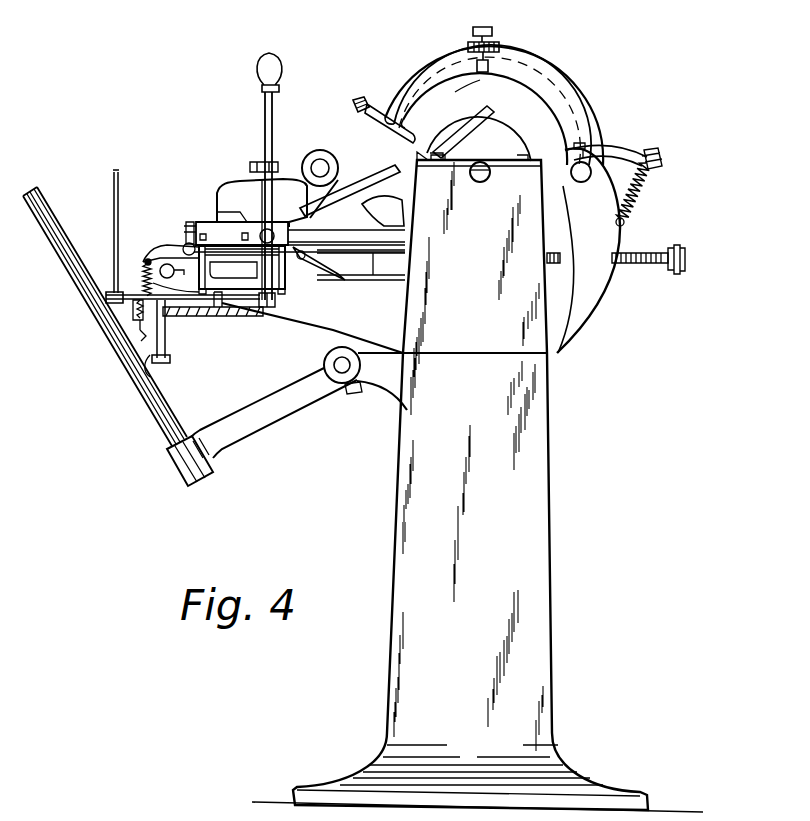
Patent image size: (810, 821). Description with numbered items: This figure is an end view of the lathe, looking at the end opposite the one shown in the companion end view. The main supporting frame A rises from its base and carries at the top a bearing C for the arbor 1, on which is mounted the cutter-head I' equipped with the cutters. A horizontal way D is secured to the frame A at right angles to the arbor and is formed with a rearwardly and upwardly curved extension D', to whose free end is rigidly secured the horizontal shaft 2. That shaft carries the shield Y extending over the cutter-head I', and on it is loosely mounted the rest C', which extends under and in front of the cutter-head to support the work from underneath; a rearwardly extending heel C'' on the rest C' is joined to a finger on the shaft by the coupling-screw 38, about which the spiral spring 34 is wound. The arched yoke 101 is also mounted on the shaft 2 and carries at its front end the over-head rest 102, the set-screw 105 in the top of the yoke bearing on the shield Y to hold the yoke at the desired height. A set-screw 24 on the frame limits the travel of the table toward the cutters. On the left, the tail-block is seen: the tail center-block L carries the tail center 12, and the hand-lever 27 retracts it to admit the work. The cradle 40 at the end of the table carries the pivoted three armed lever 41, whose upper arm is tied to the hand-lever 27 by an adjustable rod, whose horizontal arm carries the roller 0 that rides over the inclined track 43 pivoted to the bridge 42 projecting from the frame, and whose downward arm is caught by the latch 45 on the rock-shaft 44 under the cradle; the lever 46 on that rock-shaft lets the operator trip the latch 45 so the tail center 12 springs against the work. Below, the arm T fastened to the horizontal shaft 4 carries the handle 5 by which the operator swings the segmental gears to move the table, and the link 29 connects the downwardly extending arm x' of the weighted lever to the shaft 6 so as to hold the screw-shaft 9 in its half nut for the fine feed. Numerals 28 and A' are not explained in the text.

The main supporting frame A is at (477, 482).
The arbor 1 is at (478, 183).
The bearing C is at (489, 187).
The cutter-head I' is at (479, 139).
The over-head rest 102 is at (413, 136).
The arched yoke 101 is at (550, 70).
The shield Y is at (461, 98).
The set-screw 105 is at (493, 30).
The curved extension D' is at (588, 250).
The horizontal shaft 2 is at (586, 181).
The heel C'' is at (606, 148).
The coupling-screw 38 is at (656, 150).
The spiral spring 34 is at (640, 199).
The set-screw 24 is at (640, 256).
The hand-lever 27 is at (266, 119).
The nut 28 is at (260, 162).
The tail center-block L is at (262, 203).
The tail center 12 is at (322, 158).
The three armed lever 41 is at (268, 195).
The arm A' is at (350, 189).
The rest C' is at (376, 211).
The roller 0 is at (260, 231).
The bridge 42 is at (318, 240).
The inclined track 43 is at (335, 265).
The cradle 40 is at (244, 276).
The shaft 6 is at (172, 277).
The rock-shaft 44 is at (128, 296).
The lever 46 is at (119, 203).
The latch 45 is at (276, 306).
The screw-shaft 9 is at (220, 317).
The downwardly extending arm x' is at (163, 331).
The link 29 is at (150, 377).
The handle 5 is at (134, 385).
The arm T is at (264, 427).
The horizontal shaft 4 is at (334, 363).
The horizontal way D is at (314, 351).